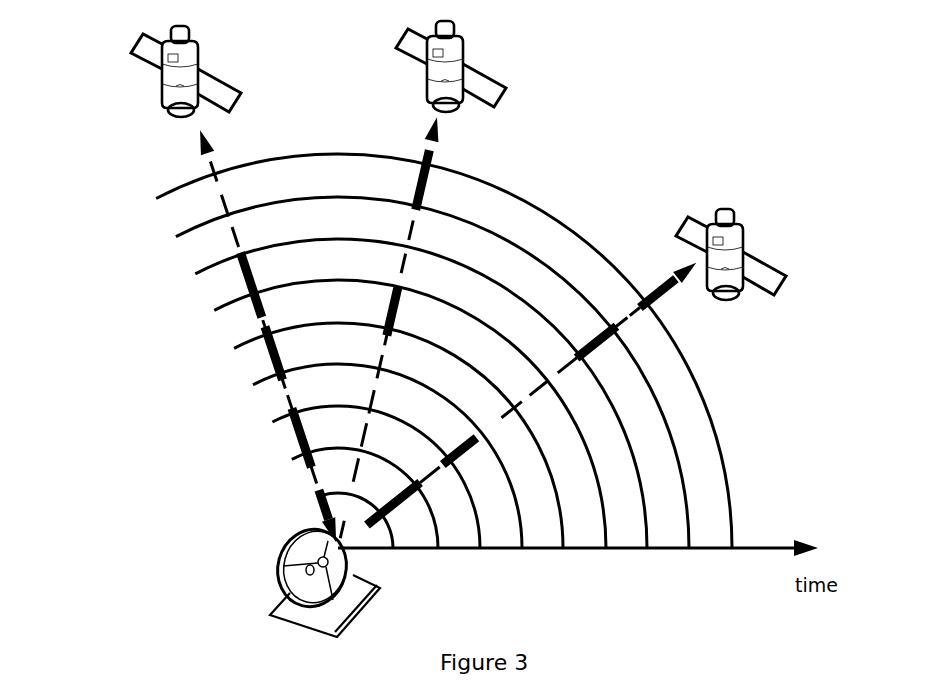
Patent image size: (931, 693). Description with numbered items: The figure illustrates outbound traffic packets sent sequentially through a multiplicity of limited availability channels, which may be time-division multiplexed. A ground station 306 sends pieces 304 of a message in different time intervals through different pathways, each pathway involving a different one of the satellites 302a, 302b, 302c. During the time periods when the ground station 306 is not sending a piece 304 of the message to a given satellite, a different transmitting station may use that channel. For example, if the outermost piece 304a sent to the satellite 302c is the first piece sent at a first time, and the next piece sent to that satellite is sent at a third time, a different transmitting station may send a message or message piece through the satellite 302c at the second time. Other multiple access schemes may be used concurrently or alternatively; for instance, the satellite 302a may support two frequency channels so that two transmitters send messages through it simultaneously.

The satellite 302a is at (130, 75).
The satellite 302b is at (383, 40).
The satellite 302c is at (675, 217).
The pieces of a message 304 is at (307, 453).
The outermost piece 304a is at (673, 303).
The ground station 306 is at (272, 587).